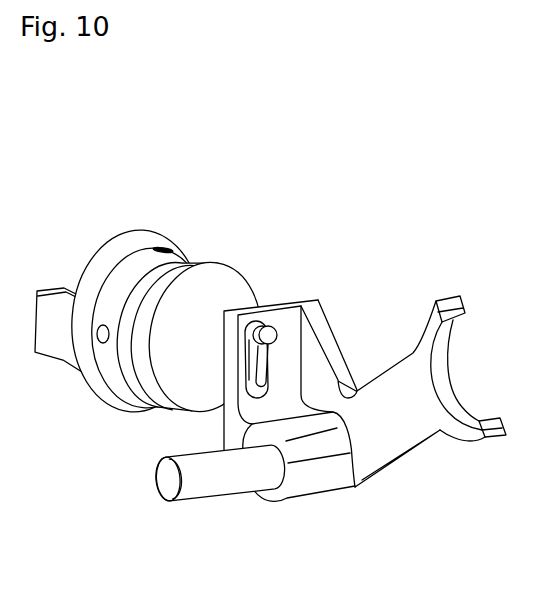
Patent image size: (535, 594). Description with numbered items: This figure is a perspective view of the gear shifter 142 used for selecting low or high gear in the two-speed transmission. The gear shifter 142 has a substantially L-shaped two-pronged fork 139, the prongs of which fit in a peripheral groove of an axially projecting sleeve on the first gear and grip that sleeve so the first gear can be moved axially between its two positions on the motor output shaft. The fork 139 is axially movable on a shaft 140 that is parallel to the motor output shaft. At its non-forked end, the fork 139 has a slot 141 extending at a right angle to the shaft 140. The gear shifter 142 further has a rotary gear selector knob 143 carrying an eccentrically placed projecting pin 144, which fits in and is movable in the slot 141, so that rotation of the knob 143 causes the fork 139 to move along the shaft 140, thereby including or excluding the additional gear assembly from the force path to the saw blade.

The fork 139 is at (392, 428).
The shaft 140 is at (200, 483).
The slot 141 is at (258, 378).
The gear shifter 142 is at (257, 501).
The rotary gear selector knob 143 is at (134, 231).
The projecting pin 144 is at (270, 336).